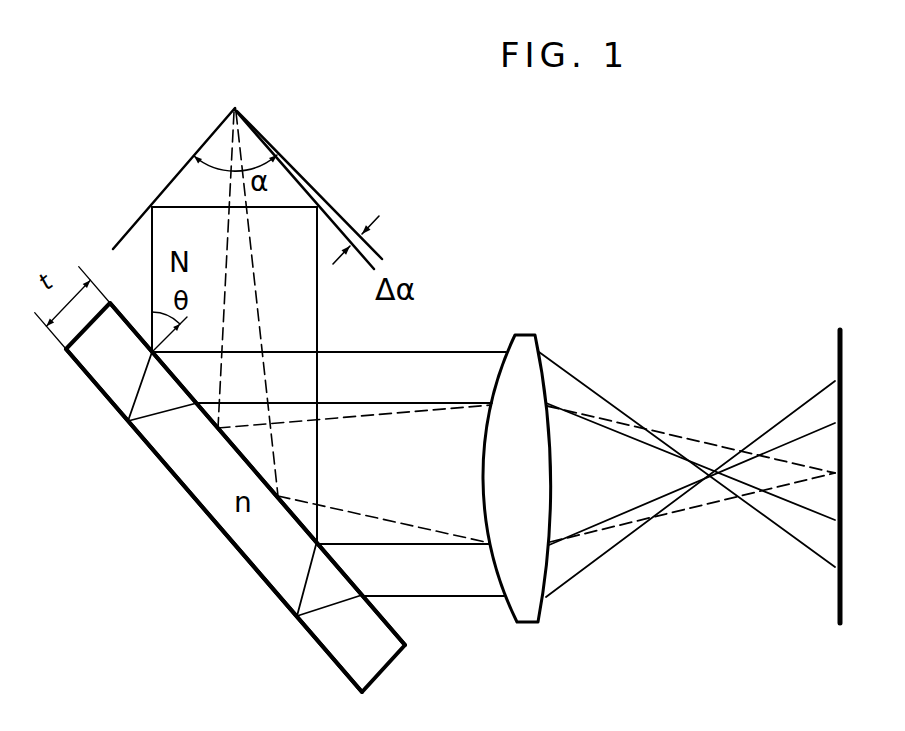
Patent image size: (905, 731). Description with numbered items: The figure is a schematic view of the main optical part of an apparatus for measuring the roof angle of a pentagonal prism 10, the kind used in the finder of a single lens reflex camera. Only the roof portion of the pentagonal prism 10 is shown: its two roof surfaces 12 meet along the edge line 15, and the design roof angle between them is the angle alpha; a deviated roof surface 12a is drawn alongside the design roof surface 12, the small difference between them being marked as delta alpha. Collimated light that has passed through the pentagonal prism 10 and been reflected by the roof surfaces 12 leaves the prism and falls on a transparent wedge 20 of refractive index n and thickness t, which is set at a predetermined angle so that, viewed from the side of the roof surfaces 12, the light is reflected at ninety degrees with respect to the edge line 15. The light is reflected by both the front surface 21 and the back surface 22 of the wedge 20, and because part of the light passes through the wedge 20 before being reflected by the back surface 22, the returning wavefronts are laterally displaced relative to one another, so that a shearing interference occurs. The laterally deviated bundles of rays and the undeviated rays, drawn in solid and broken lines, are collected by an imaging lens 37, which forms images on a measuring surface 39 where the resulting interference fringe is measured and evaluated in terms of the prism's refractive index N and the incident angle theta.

The pentagonal prism 10 is at (212, 102).
The roof surface 12 is at (170, 182).
The tilted face of prism (deviation by angle delta alpha) 12a is at (312, 185).
The edge line 15 is at (236, 107).
The transparent wedge 20 is at (88, 378).
The front surface 21 is at (243, 451).
The back surface 22 is at (166, 453).
The imaging lens 37 is at (522, 360).
The measuring surface 39 is at (835, 348).